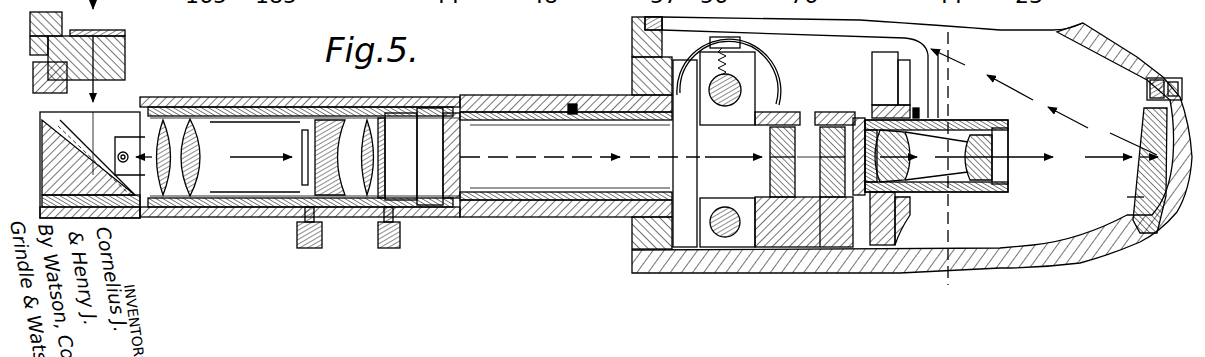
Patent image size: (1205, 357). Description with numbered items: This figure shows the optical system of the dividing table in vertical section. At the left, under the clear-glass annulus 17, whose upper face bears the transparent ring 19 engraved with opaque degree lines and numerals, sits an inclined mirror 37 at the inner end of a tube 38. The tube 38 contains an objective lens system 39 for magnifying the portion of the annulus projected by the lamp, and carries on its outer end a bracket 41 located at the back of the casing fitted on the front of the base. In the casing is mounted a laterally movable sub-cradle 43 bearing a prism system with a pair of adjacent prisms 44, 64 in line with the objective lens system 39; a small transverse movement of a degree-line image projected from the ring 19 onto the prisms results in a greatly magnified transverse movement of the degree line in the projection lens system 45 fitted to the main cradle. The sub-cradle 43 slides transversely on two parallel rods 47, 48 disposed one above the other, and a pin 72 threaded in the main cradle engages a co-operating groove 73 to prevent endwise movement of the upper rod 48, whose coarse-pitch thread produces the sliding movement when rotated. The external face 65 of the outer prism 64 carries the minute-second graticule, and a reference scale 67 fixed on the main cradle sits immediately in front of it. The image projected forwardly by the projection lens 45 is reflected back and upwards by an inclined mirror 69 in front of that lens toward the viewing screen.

The clear-glass annulus 17 is at (125, 62).
The transparent ring 19 is at (125, 33).
The inclined mirror 37 is at (127, 210).
The tube 38 is at (213, 97).
The objective lens system 39 is at (168, 196).
The bracket 41 is at (677, 213).
The sub-cradle 43 is at (795, 112).
The prism 44 is at (787, 197).
The projection lens system 45 is at (983, 172).
The lower rod 47 is at (718, 236).
The upper rod 48 is at (724, 106).
The outer prism 64 is at (832, 197).
The external face 65 is at (862, 192).
The reference scale 67 is at (867, 140).
The inclined mirror 69 is at (1147, 180).
The pin 72 is at (720, 62).
The groove 73 is at (645, 73).